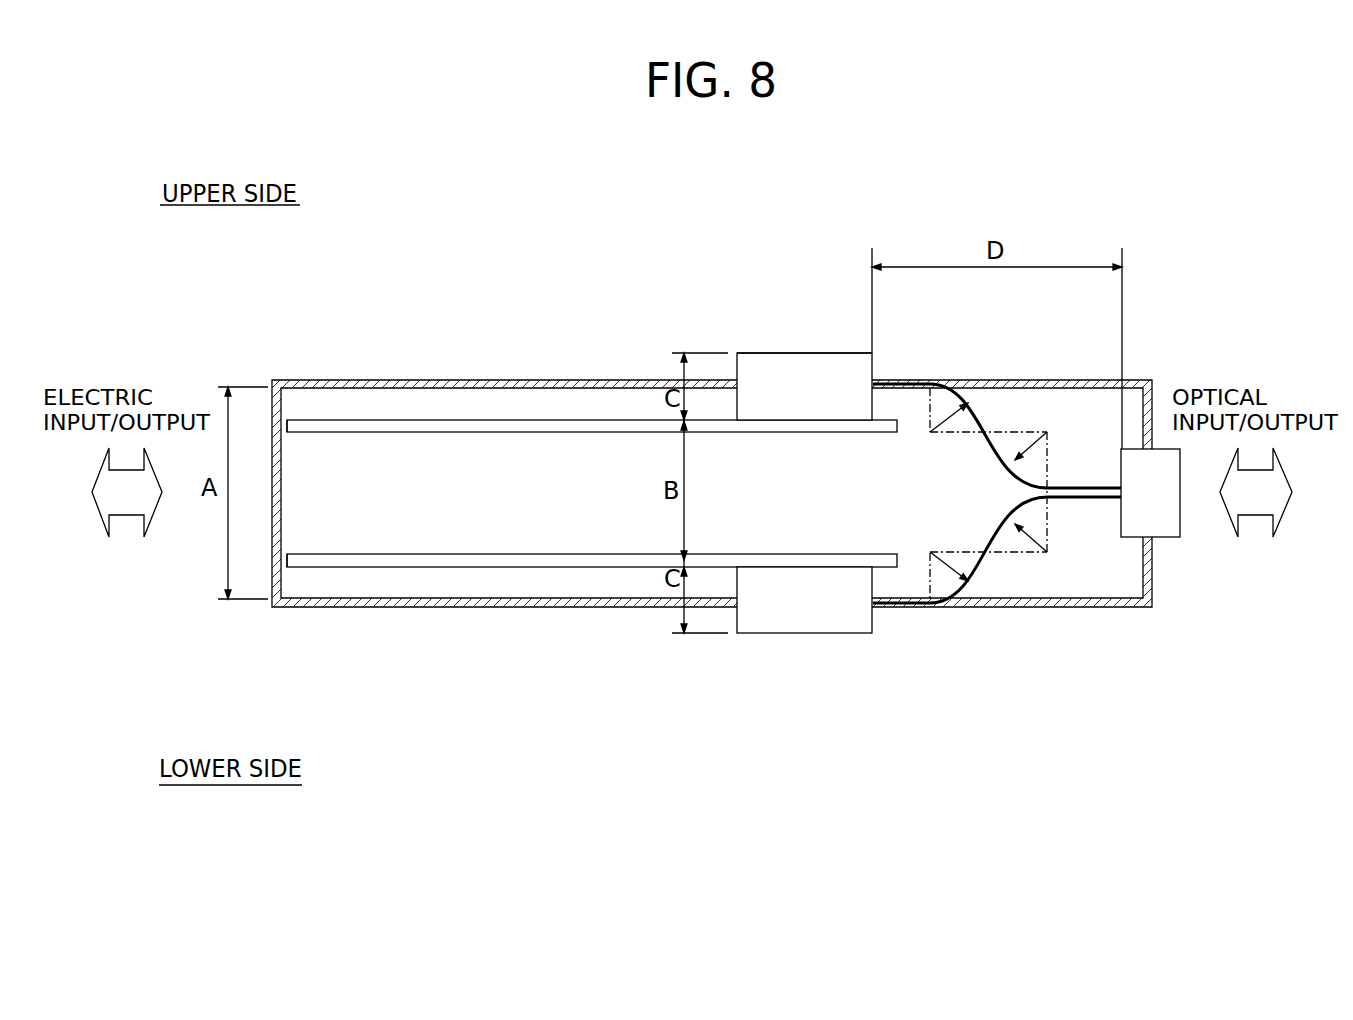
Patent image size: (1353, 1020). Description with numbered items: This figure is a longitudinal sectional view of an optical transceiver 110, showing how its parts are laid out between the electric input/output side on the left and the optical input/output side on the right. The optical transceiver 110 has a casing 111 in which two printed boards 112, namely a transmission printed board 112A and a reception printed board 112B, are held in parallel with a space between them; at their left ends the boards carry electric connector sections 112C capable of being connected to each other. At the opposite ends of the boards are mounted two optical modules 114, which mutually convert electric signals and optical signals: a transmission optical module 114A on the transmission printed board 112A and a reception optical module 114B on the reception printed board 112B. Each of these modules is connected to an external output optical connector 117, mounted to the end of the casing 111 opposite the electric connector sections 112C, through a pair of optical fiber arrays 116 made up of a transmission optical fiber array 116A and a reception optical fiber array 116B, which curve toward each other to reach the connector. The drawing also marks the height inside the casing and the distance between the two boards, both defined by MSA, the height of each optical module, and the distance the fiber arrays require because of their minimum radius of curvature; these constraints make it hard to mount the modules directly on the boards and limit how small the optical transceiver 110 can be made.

The optical transceiver 110 is at (1174, 266).
The casing 111 is at (432, 381).
The printed boards 112 is at (615, 420).
The transmission printed board 112A is at (527, 420).
The reception printed board 112B is at (505, 567).
The electric connector sections 112C is at (326, 418).
The optical modules 114 is at (762, 353).
The transmission optical module 114A is at (808, 370).
The reception optical module 114B is at (812, 633).
The optical fiber arrays 116 is at (898, 382).
The transmission optical fiber array 116A is at (933, 381).
The reception optical fiber array 116B is at (910, 607).
The external output optical connector 117 is at (1170, 530).